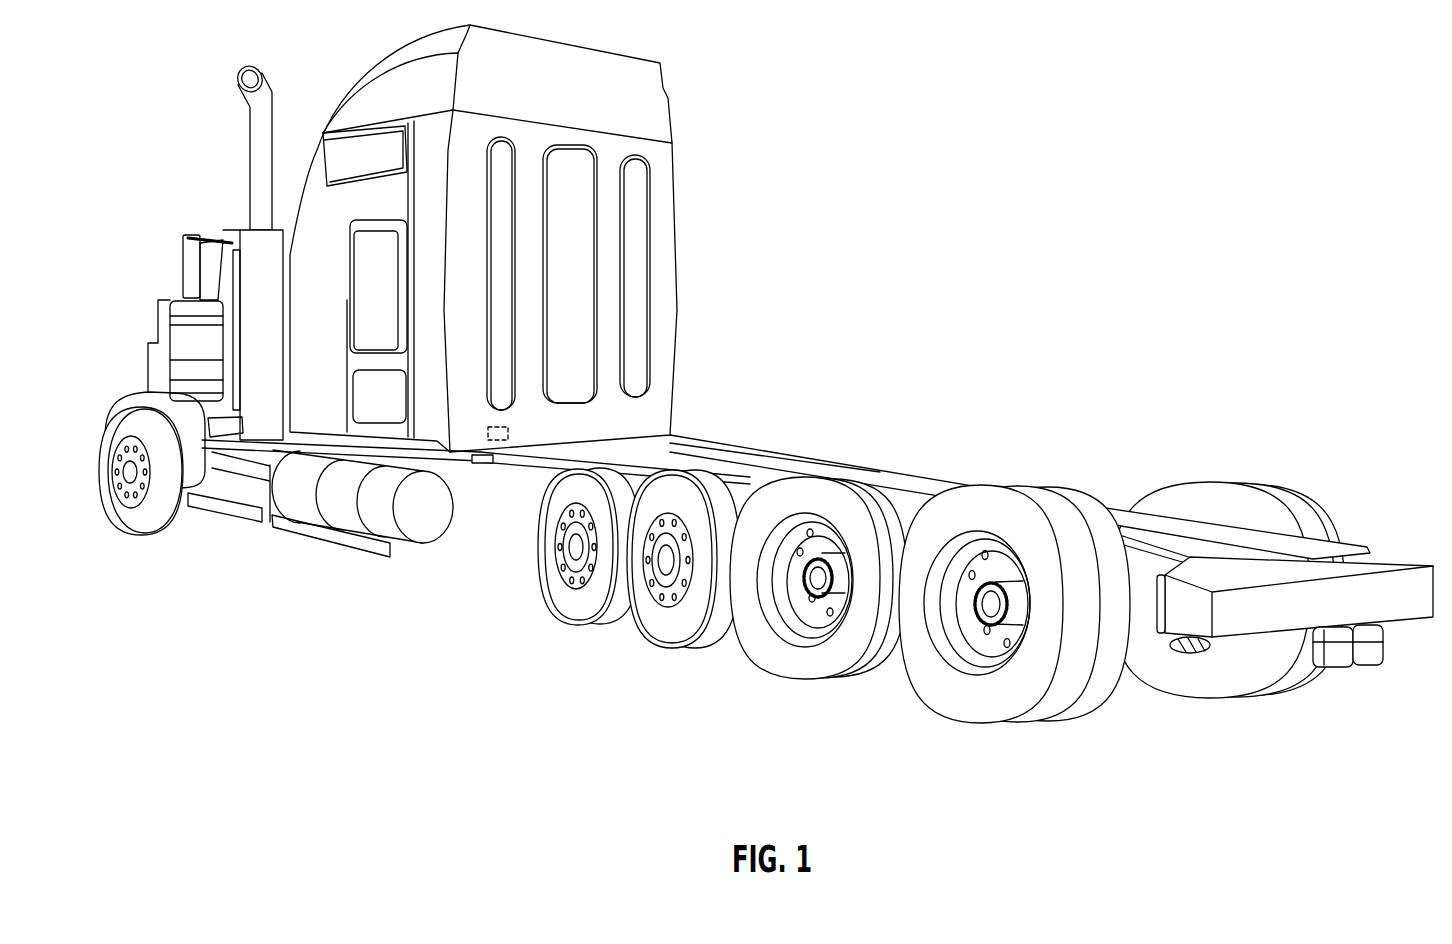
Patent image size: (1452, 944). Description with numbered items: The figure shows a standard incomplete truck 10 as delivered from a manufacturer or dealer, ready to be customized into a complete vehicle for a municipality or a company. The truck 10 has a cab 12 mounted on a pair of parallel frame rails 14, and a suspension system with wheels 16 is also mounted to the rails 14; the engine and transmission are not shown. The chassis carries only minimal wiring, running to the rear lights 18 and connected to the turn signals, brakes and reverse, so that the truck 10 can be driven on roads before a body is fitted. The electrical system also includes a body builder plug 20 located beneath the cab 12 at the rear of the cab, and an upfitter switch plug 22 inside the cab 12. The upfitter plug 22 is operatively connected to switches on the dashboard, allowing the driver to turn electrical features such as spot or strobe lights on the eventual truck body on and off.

The truck 10 is at (767, 411).
The cab 12 is at (663, 204).
The frame rails 14 is at (735, 457).
The wheels 16 is at (1180, 683).
The rear lights 18 is at (1342, 652).
The body builder plug 20 is at (480, 463).
The upfitter switch plug 22 is at (500, 442).